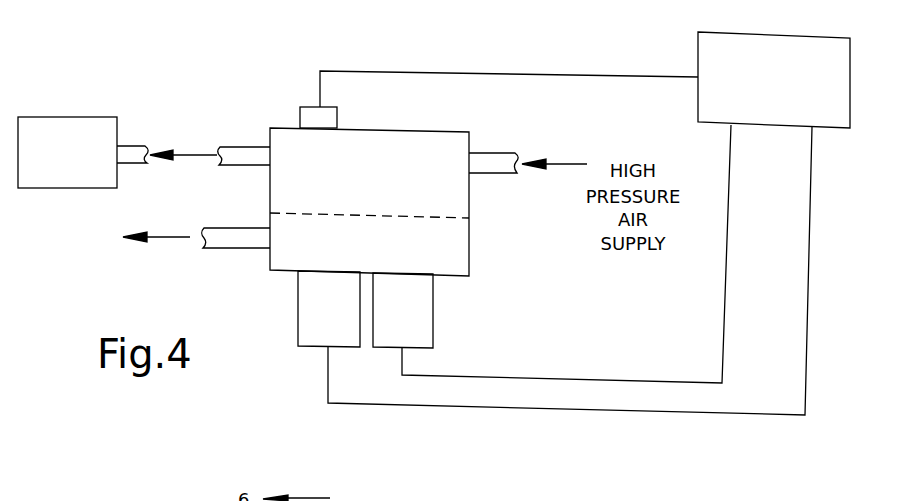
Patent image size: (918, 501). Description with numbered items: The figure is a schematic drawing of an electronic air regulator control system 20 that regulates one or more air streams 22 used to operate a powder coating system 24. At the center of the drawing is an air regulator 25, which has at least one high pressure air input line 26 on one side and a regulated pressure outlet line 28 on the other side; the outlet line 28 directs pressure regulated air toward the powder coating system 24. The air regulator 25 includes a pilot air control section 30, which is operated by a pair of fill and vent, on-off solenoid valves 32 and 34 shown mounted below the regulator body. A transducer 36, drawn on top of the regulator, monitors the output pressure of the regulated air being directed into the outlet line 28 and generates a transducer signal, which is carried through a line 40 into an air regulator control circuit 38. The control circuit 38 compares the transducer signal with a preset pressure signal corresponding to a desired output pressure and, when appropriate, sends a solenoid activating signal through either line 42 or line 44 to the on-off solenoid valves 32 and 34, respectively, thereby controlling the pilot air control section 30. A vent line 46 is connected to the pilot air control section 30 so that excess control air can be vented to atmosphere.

The electronic air regulator control system 20 is at (636, 445).
The air streams 22 is at (198, 150).
The powder coating system 24 is at (48, 117).
The air regulator 25 is at (401, 98).
The high pressure air input line 26 is at (490, 152).
The regulated pressure outlet line 28 is at (246, 147).
The pilot air control section 30 is at (437, 249).
The on-off solenoid valve 32 is at (433, 298).
The on-off solenoid valve 34 is at (298, 305).
The transducer 36 is at (310, 107).
The air regulator control circuit 38 is at (698, 52).
The line 40 is at (545, 73).
The line 42 is at (545, 380).
The line 44 is at (568, 412).
The vent line 46 is at (238, 248).